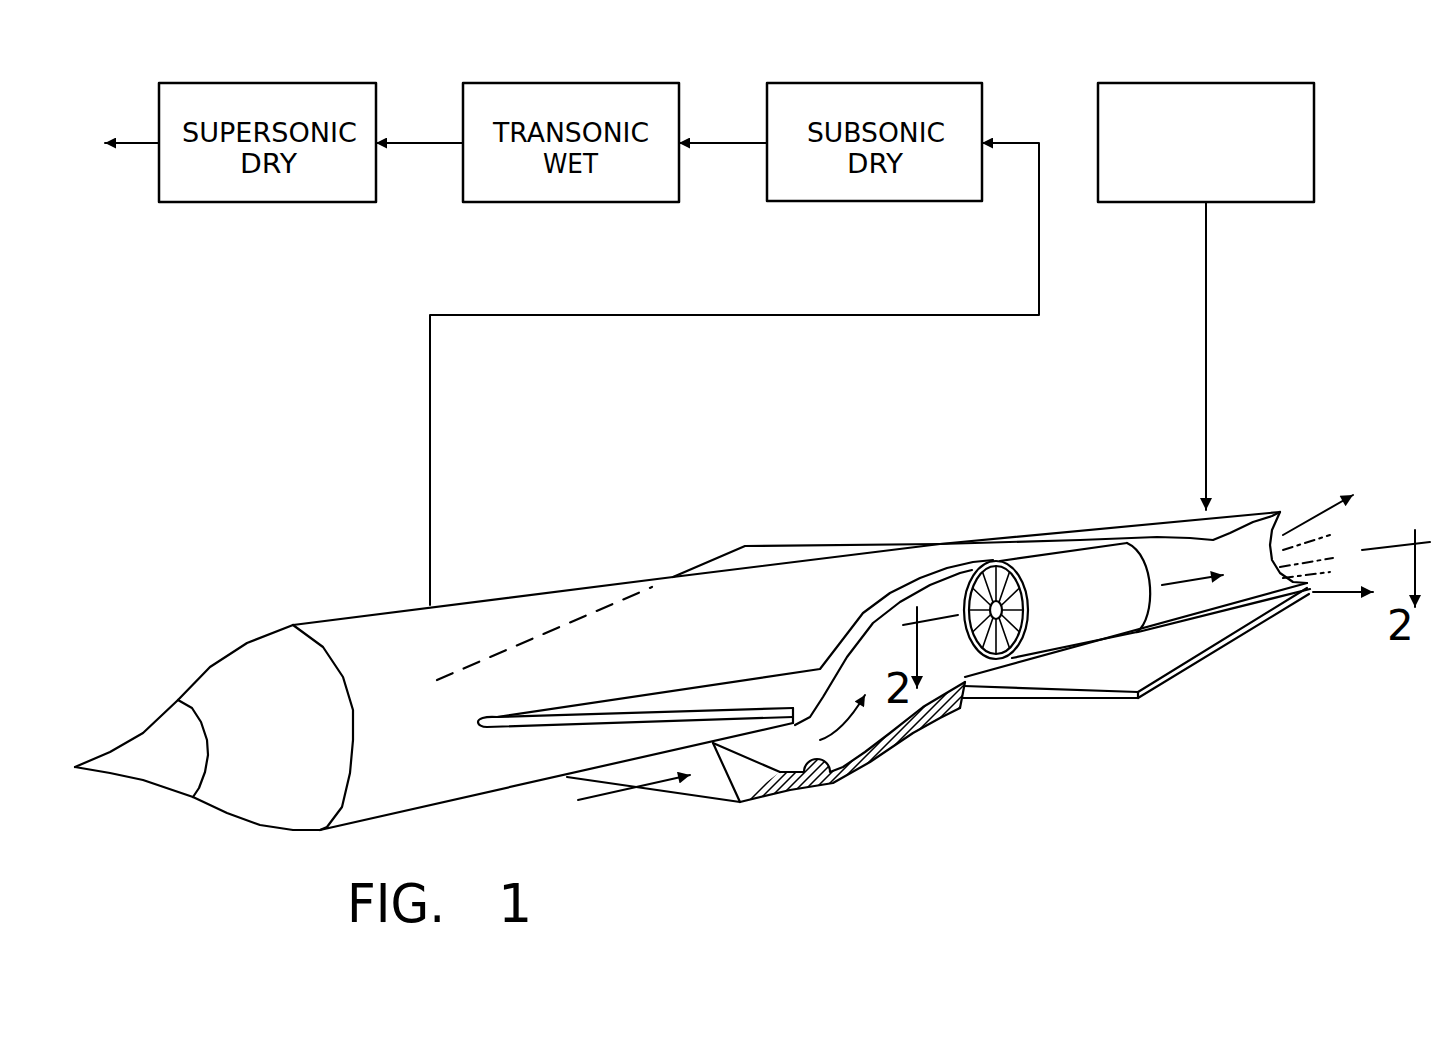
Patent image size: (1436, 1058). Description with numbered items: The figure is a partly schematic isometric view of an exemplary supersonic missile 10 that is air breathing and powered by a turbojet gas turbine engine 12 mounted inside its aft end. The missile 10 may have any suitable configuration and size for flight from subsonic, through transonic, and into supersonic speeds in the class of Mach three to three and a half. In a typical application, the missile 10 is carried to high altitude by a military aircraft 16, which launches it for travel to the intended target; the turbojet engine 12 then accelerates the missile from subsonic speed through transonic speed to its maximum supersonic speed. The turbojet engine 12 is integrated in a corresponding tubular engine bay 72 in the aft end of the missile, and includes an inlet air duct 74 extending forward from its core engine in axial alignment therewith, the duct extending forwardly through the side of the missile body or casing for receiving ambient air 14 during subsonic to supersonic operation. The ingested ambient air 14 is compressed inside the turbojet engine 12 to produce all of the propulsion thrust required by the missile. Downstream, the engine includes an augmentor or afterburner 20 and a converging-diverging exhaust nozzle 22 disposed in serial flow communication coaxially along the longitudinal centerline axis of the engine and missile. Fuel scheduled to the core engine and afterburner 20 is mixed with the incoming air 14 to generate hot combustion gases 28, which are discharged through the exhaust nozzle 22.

The supersonic missile 10 is at (585, 587).
The turbojet gas turbine engine 12 is at (1060, 653).
The ambient air 14 is at (608, 797).
The military aircraft 16 is at (1152, 83).
The augmentor or afterburner 20 is at (1152, 627).
The converging-diverging exhaust nozzle 22 is at (1240, 592).
The hot combustion gases 28 is at (1305, 520).
The tubular engine bay 72 is at (1178, 533).
The inlet air duct 74 is at (837, 784).